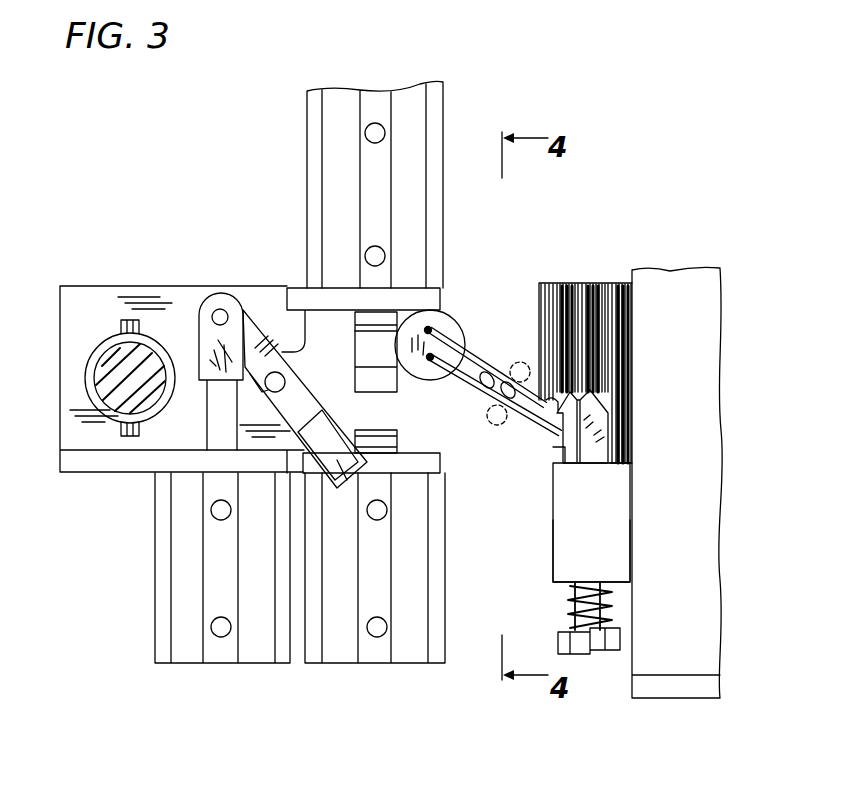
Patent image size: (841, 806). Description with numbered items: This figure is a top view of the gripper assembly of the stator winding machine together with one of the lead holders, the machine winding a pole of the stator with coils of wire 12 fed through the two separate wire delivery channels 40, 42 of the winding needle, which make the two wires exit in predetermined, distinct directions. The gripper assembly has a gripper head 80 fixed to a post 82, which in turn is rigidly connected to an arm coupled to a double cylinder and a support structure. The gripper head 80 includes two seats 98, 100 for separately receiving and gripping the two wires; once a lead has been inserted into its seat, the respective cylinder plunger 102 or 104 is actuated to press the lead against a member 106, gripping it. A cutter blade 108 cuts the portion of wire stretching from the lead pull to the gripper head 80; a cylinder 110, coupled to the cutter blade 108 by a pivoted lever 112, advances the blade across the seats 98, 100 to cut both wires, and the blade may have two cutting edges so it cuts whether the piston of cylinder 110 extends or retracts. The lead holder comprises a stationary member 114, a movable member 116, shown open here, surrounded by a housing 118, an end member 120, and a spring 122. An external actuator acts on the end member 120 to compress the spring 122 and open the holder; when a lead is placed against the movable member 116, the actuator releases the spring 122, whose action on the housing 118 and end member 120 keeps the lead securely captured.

The coils of wire 12 is at (614, 282).
The wire delivery channel 40 is at (458, 324).
The wire delivery channel 42 is at (424, 366).
The gripper head 80 is at (72, 435).
The post 82 is at (107, 380).
The seat 98 is at (394, 419).
The seat 100 is at (365, 348).
The cylinder plunger 102 is at (393, 423).
The cylinder plunger 104 is at (381, 318).
The member 106 is at (373, 375).
The cutter blade 108 is at (345, 490).
The cylinder 110 is at (180, 645).
The pivoted lever 112 is at (203, 350).
The stationary member 114 is at (556, 452).
The movable member 116 is at (573, 462).
The housing 118 is at (567, 558).
The end member 120 is at (588, 656).
The spring 122 is at (568, 612).